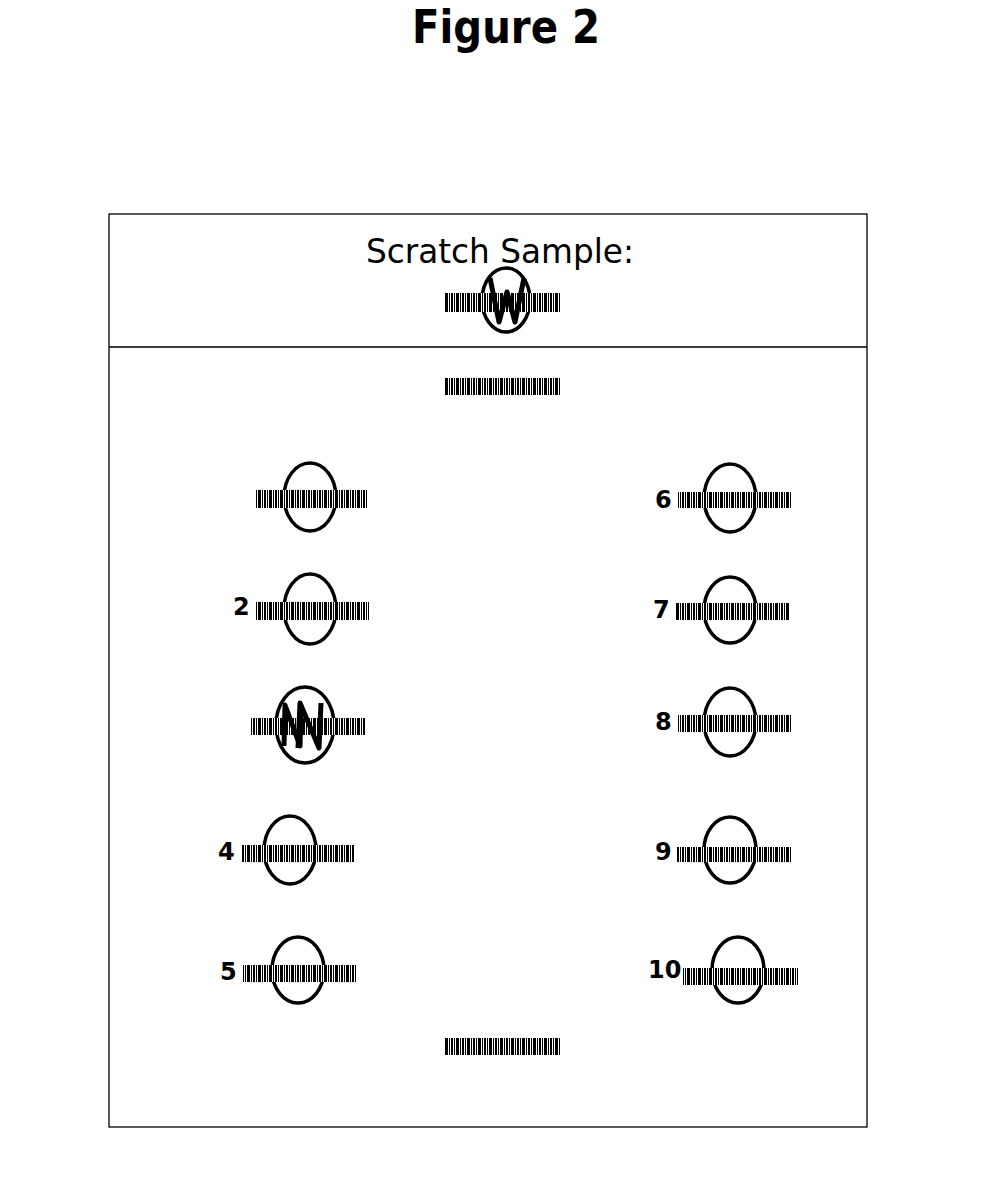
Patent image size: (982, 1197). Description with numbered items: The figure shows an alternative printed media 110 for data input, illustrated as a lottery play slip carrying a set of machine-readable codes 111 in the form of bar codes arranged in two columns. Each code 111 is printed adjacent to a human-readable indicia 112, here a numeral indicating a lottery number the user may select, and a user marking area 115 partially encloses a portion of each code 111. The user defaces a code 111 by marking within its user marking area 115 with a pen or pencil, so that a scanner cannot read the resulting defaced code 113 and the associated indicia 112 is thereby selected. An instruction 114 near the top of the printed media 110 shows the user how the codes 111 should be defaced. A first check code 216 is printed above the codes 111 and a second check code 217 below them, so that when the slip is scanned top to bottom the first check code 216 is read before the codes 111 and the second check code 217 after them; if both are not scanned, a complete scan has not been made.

The printed media 110 is at (155, 213).
The machine-readable codes 111 is at (370, 490).
The human-readable indicia 112 is at (232, 491).
The defaced code 113 is at (298, 745).
The instruction 114 is at (605, 292).
The user marking area 115 is at (280, 523).
The first check code 216 is at (565, 392).
The second check code 217 is at (560, 1048).